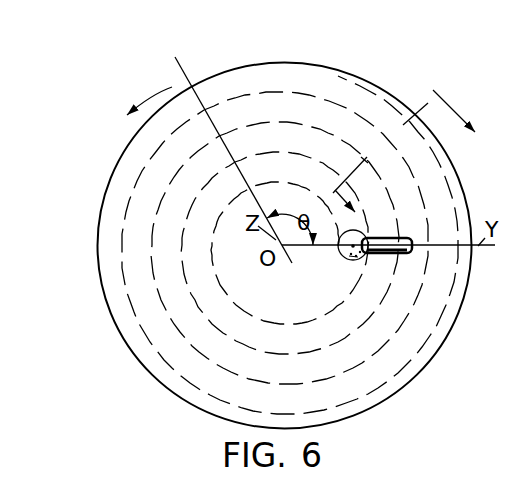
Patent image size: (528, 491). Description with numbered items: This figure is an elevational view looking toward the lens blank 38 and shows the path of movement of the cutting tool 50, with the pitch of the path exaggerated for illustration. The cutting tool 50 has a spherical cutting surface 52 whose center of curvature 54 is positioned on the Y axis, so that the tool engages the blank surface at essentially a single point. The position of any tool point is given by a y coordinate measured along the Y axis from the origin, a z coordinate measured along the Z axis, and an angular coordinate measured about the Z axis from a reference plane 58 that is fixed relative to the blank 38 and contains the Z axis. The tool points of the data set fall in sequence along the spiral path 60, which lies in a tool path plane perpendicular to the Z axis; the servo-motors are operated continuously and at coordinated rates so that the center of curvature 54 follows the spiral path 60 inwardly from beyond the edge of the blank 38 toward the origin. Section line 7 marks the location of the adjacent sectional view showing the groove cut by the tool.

The blank 38 is at (98, 212).
The cutting tool 50 is at (383, 255).
The spherical cutting surface 52 is at (348, 257).
The center of curvature 54 is at (350, 247).
The reference plane 58 is at (190, 80).
The spiral path 60 is at (421, 192).
The section line 7- 7 is at (438, 93).